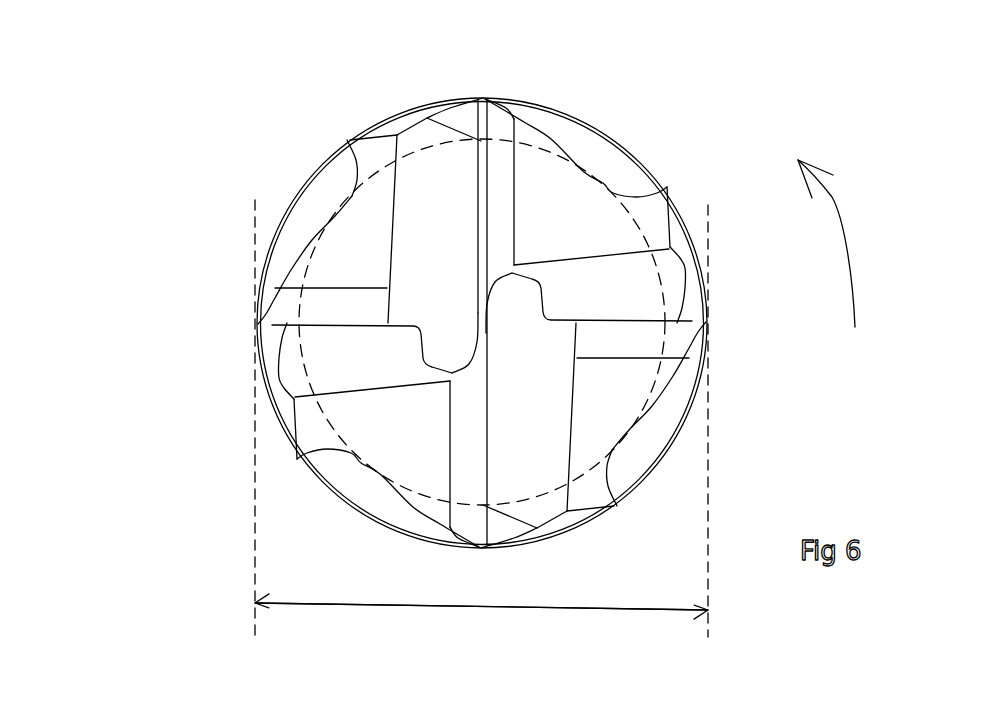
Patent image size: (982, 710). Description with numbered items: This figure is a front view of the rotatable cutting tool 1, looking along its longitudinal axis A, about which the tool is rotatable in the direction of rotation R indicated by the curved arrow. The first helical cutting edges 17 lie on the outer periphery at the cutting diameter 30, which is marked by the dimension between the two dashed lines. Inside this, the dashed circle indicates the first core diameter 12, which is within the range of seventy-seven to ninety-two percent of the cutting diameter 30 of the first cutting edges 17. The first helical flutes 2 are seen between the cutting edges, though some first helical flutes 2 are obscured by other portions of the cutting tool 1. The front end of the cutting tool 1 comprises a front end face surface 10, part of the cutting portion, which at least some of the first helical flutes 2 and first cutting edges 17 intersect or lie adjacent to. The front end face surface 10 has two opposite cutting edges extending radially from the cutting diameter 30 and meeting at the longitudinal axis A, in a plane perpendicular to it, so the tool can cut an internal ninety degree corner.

The rotatable cutting tool 1 is at (207, 153).
The first helical flutes 2 is at (352, 198).
The front end face surface 10 is at (482, 323).
The first core diameter 12 is at (617, 445).
The first helical cutting edges 17 is at (350, 138).
The cutting diameter 30 is at (481, 422).
The longitudinal axis A is at (459, 315).
The direction of rotation R is at (820, 230).